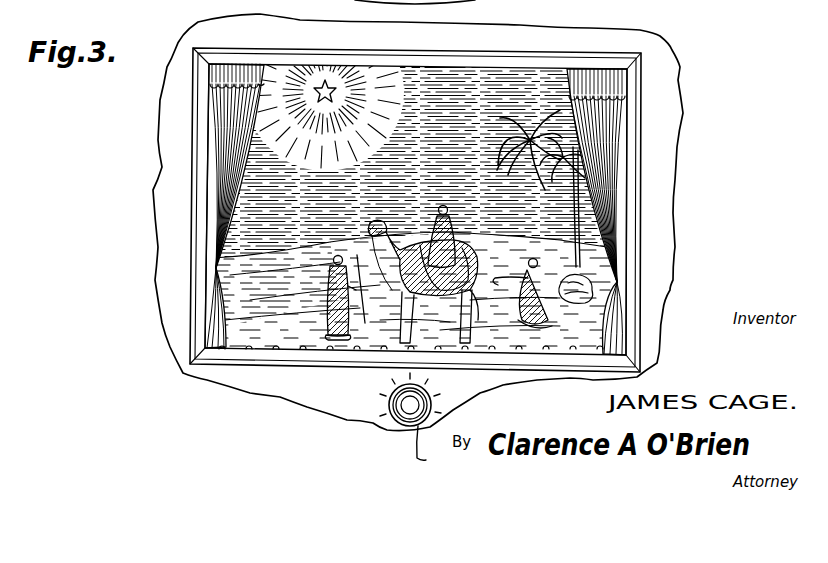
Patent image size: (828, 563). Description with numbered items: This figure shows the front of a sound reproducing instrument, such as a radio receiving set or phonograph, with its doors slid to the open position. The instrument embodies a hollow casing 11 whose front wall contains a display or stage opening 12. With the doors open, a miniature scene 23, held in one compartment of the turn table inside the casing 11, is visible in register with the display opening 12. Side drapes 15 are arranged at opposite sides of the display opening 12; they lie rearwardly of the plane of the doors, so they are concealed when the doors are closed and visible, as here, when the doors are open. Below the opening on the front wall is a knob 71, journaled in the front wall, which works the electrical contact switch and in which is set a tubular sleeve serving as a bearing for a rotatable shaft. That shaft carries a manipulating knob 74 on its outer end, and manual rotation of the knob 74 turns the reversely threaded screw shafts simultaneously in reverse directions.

The hollow casing 11 is at (665, 172).
The display or stage opening 12 is at (545, 72).
The side drapes 15 is at (233, 107).
The miniature scene 23 is at (550, 248).
The knob 71 is at (432, 450).
The manipulating knob 74 is at (402, 425).